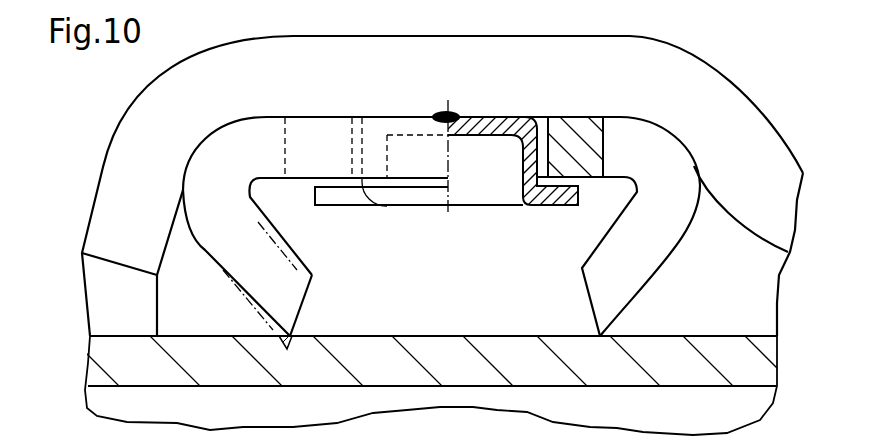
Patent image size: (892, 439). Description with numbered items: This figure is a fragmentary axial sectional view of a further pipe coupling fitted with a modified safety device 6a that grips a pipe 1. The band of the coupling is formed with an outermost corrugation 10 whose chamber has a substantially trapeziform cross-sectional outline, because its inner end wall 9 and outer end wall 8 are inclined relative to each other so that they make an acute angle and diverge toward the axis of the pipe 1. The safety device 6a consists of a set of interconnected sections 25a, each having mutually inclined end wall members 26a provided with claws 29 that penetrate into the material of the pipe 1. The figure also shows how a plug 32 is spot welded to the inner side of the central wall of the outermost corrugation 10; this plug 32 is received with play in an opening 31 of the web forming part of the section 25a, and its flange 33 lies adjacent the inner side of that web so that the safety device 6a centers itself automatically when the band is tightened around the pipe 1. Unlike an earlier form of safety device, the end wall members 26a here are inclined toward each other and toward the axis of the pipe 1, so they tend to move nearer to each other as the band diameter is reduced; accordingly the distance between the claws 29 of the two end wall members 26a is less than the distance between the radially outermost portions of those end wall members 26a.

The pipe 1 is at (443, 336).
The safety device 6a is at (395, 220).
The outer end wall 8 is at (103, 167).
The inner end wall 9 is at (767, 245).
The outermost corrugation 10 is at (497, 35).
The section 25a is at (341, 113).
The end wall member 26a is at (283, 240).
The claw 29 is at (292, 337).
The opening 31 is at (543, 176).
The plug 32 is at (485, 152).
The flange 33 is at (555, 205).